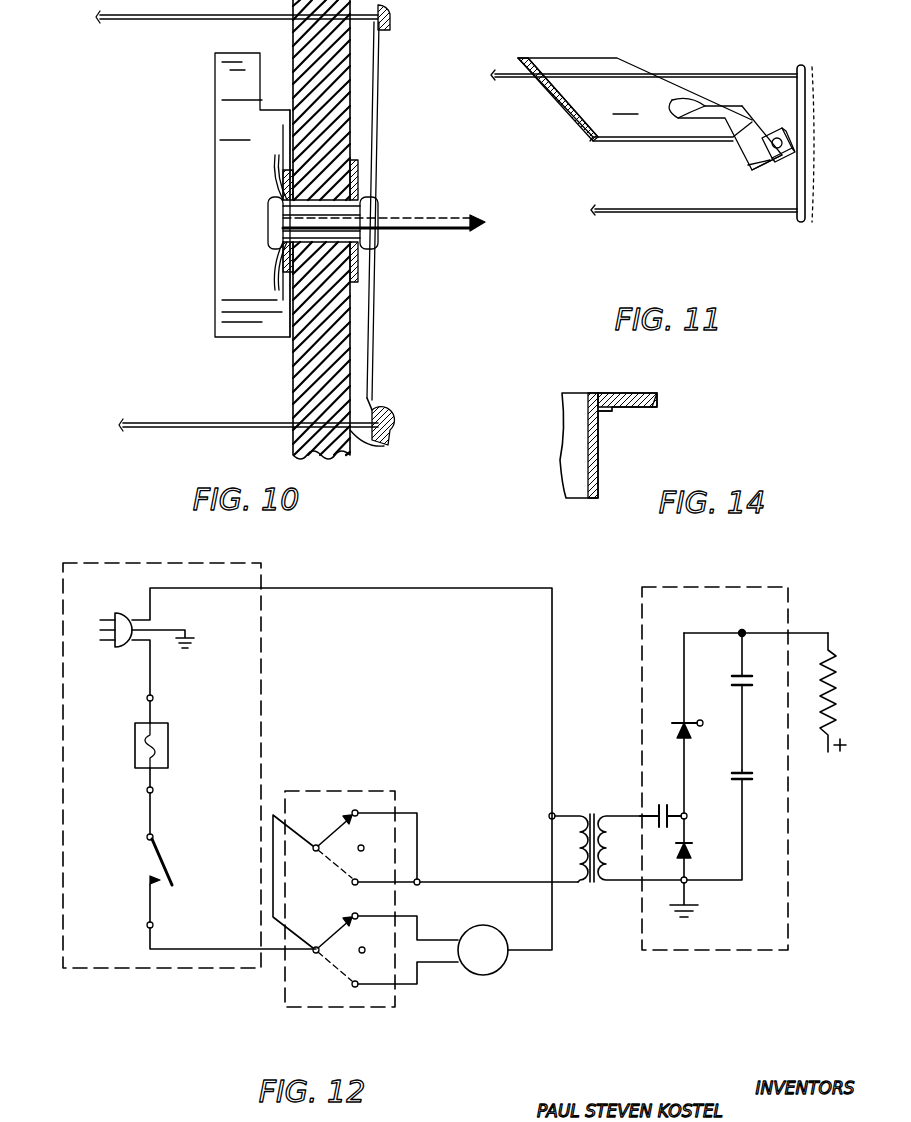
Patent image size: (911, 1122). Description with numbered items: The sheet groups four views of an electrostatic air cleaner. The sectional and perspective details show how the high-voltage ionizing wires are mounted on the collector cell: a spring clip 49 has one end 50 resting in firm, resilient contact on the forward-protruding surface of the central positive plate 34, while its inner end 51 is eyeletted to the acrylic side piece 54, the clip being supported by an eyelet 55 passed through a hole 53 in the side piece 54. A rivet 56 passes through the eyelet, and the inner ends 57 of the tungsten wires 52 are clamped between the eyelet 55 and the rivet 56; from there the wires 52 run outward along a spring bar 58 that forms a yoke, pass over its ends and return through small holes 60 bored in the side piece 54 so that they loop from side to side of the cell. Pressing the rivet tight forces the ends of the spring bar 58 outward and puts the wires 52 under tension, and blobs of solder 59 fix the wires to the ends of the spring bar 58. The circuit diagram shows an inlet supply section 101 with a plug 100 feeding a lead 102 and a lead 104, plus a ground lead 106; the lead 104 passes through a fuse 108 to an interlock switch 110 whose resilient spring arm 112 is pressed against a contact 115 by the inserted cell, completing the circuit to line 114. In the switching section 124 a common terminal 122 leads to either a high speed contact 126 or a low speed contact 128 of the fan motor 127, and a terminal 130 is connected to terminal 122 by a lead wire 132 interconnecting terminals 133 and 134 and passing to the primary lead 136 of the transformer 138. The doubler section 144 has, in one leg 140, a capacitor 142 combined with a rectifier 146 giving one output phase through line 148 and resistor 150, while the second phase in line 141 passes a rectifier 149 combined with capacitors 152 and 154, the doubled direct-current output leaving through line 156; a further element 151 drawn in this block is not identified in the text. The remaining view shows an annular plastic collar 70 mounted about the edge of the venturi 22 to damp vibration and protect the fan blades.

In FIG. 11, the central plate 34 is at (635, 99).
In FIG. 10, the spring clip 49 is at (222, 200).
In FIG. 11, the spring clip 49 is at (742, 112).
In FIG. 10, the end of spring clip 50 is at (220, 70).
In FIG. 11, the end of spring clip 50 is at (692, 100).
In FIG. 10, the inner end of spring clip 51 is at (288, 130).
In FIG. 11, the inner end of spring clip 51 is at (780, 165).
In FIG. 10, the ionizing wires 52 is at (178, 18).
In FIG. 11, the ionizing wires 52 is at (750, 74).
In FIG. 10, the hole 53 is at (356, 180).
In FIG. 10, the acrylic side piece 54 is at (352, 110).
In FIG. 10, the eyelet 55 is at (356, 250).
In FIG. 11, the eyelet 55 is at (780, 130).
In FIG. 10, the rivet 56 is at (362, 218).
In FIG. 10, the inner ends of wires 57 is at (274, 162).
In FIG. 11, the inner ends of wires 57 is at (752, 165).
In FIG. 10, the spring bar 58 is at (368, 385).
In FIG. 11, the spring bar 58 is at (806, 204).
In FIG. 10, the blobs of solder 59 is at (392, 18).
In FIG. 10, the holes 60 is at (372, 442).
In FIG. 14, the venturi 22 is at (640, 407).
In FIG. 14, the annular plastic collar 70 is at (592, 458).
In FIG. 12, the plug 100 is at (115, 615).
In FIG. 12, the inlet supply section 101 is at (120, 560).
In FIG. 12, the lead 102 is at (385, 590).
In FIG. 12, the lead 104 is at (152, 683).
In FIG. 12, the ground lead 106 is at (192, 635).
In FIG. 12, the fuse 108 is at (168, 728).
In FIG. 12, the interlock switch 110 is at (140, 854).
In FIG. 12, the resilient spring arm 112 is at (162, 862).
In FIG. 12, the line 114 is at (152, 912).
In FIG. 12, the contact 115 is at (150, 880).
In FIG. 12, the common terminal 122 is at (316, 954).
In FIG. 12, the switching circuit section 124 is at (390, 792).
In FIG. 12, the high speed contact 126 is at (353, 986).
In FIG. 12, the fan motor 127 is at (500, 932).
In FIG. 12, the low speed contact 128 is at (350, 915).
In FIG. 12, the terminal 130 is at (316, 843).
In FIG. 12, the lead wire 132 is at (272, 826).
In FIG. 12, the terminal 133 is at (352, 811).
In FIG. 12, the terminal 134 is at (350, 882).
In FIG. 12, the primary lead 136 is at (498, 882).
In FIG. 12, the transformer 138 is at (578, 884).
In FIG. 12, the leg 140 is at (630, 814).
In FIG. 12, the line 141 is at (630, 884).
In FIG. 12, the capacitor 142 is at (676, 812).
In FIG. 12, the voltage doubler circuit section 144 is at (788, 596).
In FIG. 12, the rectifier 146 is at (694, 722).
In FIG. 12, the line 148 is at (715, 633).
In FIG. 12, the rectifier 149 is at (689, 855).
In FIG. 12, the resistor 150 is at (838, 684).
In FIG. 12, the ground connection 151 is at (696, 905).
In FIG. 12, the capacitor 152 is at (748, 773).
In FIG. 12, the capacitor 154 is at (746, 676).
In FIG. 12, the output line 156 is at (830, 752).